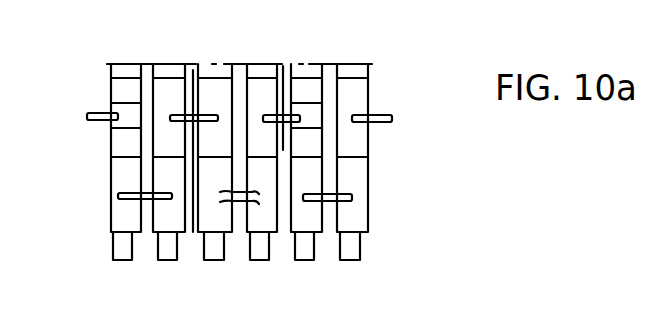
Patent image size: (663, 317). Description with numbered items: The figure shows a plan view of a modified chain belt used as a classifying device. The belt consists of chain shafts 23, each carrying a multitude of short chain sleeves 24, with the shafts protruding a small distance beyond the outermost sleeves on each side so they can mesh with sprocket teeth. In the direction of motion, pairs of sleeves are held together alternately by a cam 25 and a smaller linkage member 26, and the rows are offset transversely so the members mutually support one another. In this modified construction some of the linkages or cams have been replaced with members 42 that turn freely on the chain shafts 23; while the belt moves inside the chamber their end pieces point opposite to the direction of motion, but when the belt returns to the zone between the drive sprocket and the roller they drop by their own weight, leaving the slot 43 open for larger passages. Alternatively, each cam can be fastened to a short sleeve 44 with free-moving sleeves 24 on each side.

The chain shaft 23 is at (120, 250).
The chain sleeve 24 is at (117, 179).
The cam 25 is at (194, 70).
The linkage member 26 is at (239, 201).
The freely turning member 42 is at (96, 121).
The slot 43 is at (284, 150).
The short sleeve 44 is at (129, 112).